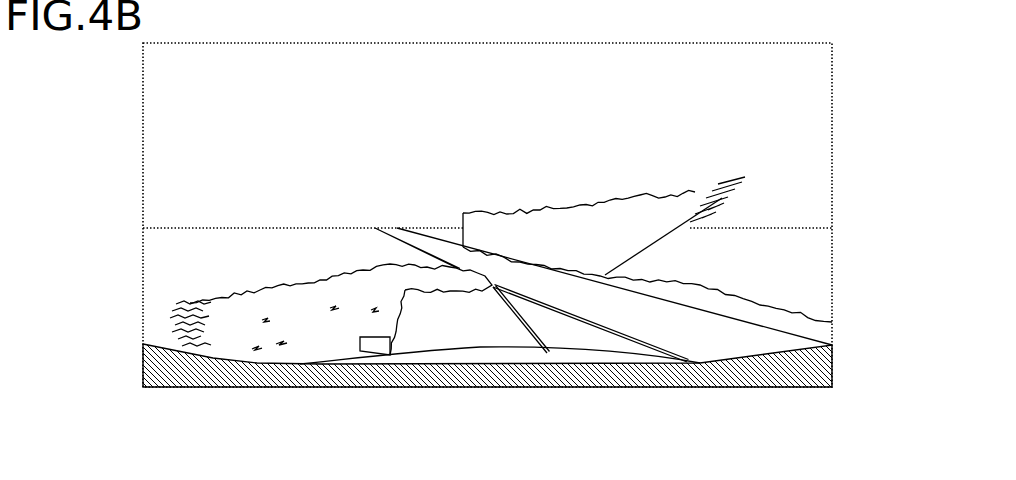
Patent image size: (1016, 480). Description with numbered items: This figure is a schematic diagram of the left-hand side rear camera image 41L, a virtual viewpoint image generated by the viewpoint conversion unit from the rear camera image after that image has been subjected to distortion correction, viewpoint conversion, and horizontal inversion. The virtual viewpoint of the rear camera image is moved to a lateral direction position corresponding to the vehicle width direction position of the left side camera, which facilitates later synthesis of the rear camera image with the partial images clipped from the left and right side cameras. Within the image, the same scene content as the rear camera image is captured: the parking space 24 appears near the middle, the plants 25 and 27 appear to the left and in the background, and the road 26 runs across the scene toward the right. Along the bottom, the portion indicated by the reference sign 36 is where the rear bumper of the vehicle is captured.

The left-hand side rear camera image 41L is at (832, 82).
The plant 27 is at (660, 218).
The road 26 is at (702, 333).
The parking space 24 is at (440, 315).
The plant 25 is at (243, 332).
The rear bumper portion 36 is at (478, 352).